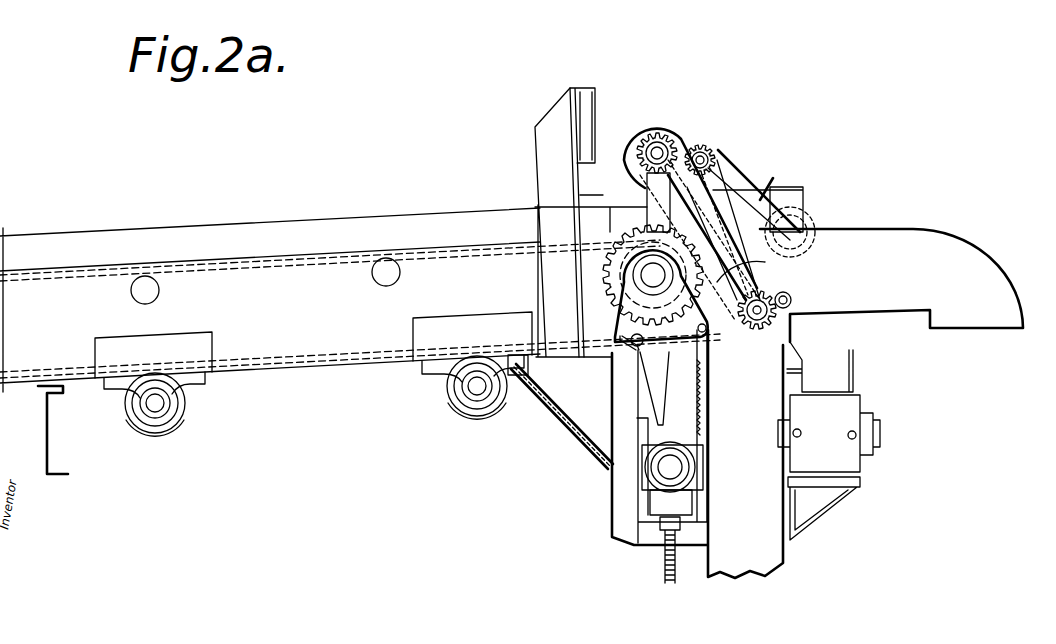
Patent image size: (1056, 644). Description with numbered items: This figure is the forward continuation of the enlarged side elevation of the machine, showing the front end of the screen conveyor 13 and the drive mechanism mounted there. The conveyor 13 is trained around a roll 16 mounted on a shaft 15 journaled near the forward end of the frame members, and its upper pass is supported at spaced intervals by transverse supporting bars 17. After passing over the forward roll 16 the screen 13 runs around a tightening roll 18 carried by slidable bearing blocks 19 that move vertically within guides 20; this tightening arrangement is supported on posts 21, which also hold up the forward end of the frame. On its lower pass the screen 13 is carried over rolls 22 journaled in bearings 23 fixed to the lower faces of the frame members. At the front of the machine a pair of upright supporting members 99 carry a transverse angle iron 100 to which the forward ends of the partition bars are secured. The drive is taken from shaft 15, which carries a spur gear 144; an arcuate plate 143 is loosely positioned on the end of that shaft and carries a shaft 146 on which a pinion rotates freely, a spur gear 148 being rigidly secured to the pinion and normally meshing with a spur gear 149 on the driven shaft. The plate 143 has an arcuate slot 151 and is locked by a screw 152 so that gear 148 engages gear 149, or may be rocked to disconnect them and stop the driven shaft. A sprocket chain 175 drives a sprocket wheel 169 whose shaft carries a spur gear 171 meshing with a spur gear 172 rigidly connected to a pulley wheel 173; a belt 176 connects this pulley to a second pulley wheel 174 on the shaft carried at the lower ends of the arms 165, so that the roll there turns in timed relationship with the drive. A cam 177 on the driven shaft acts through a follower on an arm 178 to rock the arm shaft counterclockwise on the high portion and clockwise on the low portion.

The screen conveyor 13 is at (578, 430).
The shaft 15 is at (650, 276).
The roll 16 is at (590, 285).
The supporting bars 17 is at (160, 290).
The tightening roll 18 is at (692, 440).
The bearing blocks 19 is at (696, 468).
The guides 20 is at (640, 420).
The posts 21 is at (775, 570).
The rolls 22 is at (165, 436).
The bearings 23 is at (195, 382).
The supporting members 99 is at (578, 312).
The angle iron 100 is at (647, 200).
The arcuate plate 143 is at (670, 393).
The spur gear 144 is at (600, 262).
The shaft 146 is at (735, 338).
The spur gear 148 is at (725, 360).
The spur gear 149 is at (790, 332).
The arcuate slot 151 is at (642, 338).
The screw 152 is at (622, 343).
The arms 165 is at (700, 146).
The sprocket wheel 169 is at (690, 148).
The spur gear 171 is at (703, 146).
The spur gear 172 is at (662, 122).
The pulley wheel 173 is at (642, 134).
The pulley wheel 174 is at (797, 200).
The sprocket chain 175 is at (727, 170).
The belt 176 is at (727, 187).
The cam 177 is at (770, 235).
The arm 178 is at (762, 185).